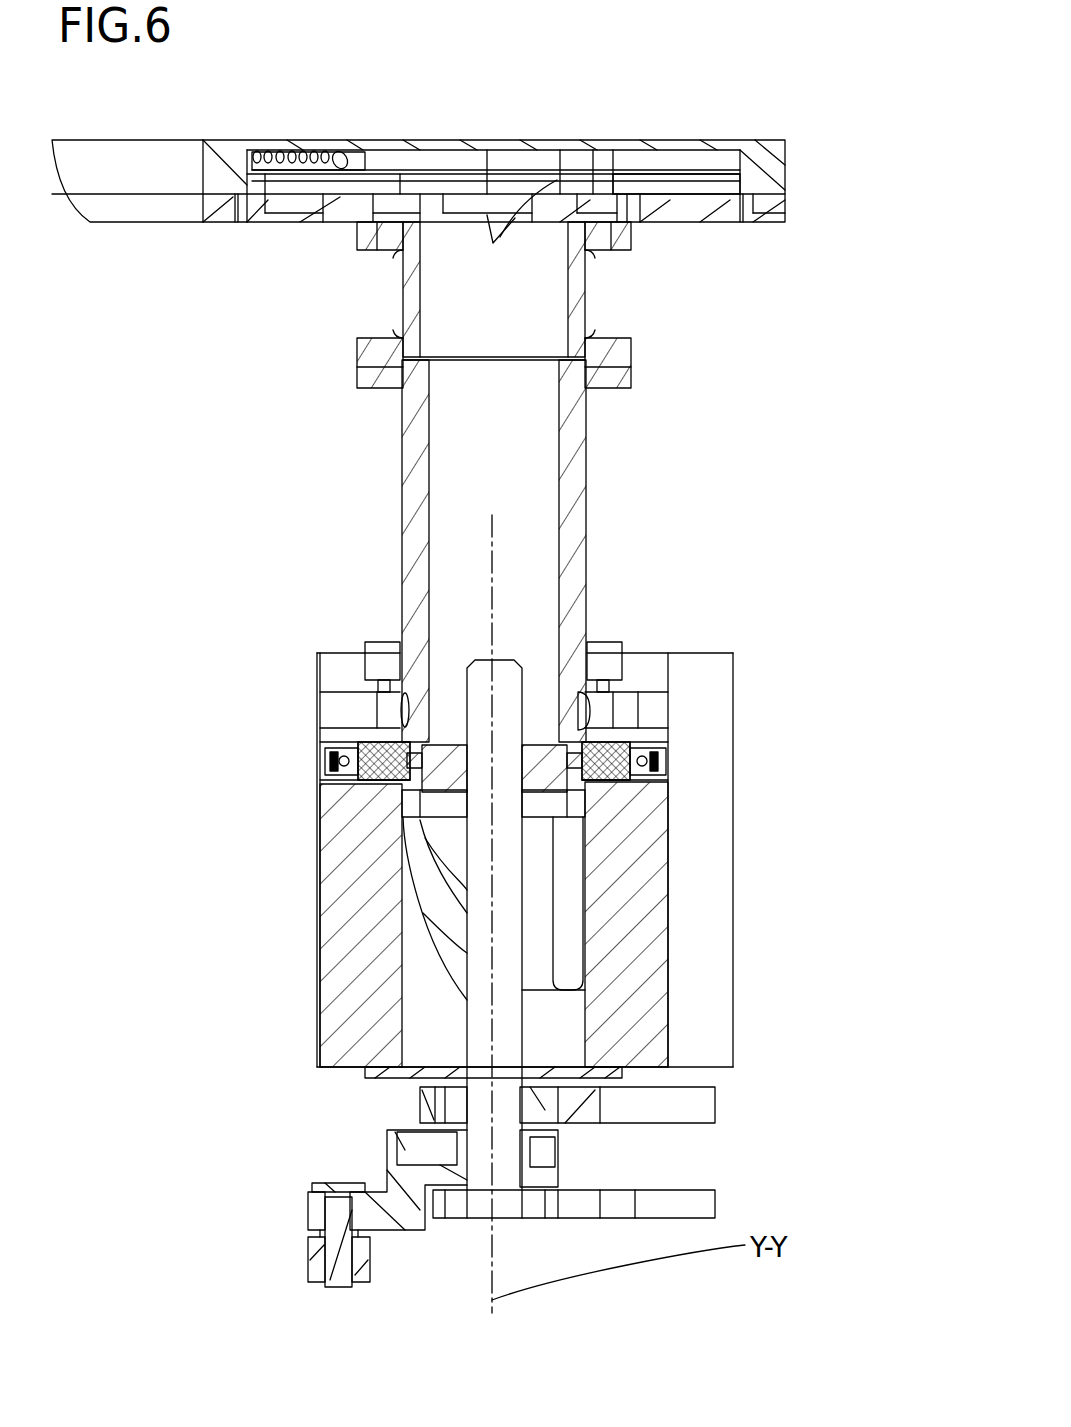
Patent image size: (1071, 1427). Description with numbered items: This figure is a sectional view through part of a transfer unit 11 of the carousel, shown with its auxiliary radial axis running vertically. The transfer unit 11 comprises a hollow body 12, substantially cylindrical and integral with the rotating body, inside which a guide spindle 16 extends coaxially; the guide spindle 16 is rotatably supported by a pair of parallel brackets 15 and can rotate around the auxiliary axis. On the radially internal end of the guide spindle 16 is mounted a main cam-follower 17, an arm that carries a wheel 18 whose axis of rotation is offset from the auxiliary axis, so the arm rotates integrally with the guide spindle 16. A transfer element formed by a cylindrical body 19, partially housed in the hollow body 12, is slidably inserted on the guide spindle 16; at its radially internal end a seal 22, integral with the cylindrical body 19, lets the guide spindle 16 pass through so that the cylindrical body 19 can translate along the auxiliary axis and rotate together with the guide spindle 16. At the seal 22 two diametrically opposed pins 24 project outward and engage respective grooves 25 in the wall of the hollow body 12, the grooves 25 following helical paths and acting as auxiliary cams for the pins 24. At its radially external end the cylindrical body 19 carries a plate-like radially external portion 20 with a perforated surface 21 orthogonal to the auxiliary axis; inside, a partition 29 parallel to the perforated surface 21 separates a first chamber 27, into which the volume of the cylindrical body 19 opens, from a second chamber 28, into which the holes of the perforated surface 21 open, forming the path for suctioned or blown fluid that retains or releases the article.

The transfer unit 11 is at (722, 462).
The hollow body 12 is at (318, 885).
The brackets 15 is at (715, 1205).
The guide spindle 16 is at (460, 975).
The main cam-follower 17 is at (372, 1167).
The wheel 18 is at (317, 1262).
The cylindrical body 19 is at (400, 540).
The radially external portion 20 is at (475, 160).
The perforated surface 21 is at (390, 140).
The seal 22 is at (535, 742).
The pins 24 is at (358, 745).
The grooves 25 is at (328, 760).
The first chamber 27 is at (678, 185).
The second chamber 28 is at (455, 160).
The partition 29 is at (641, 165).